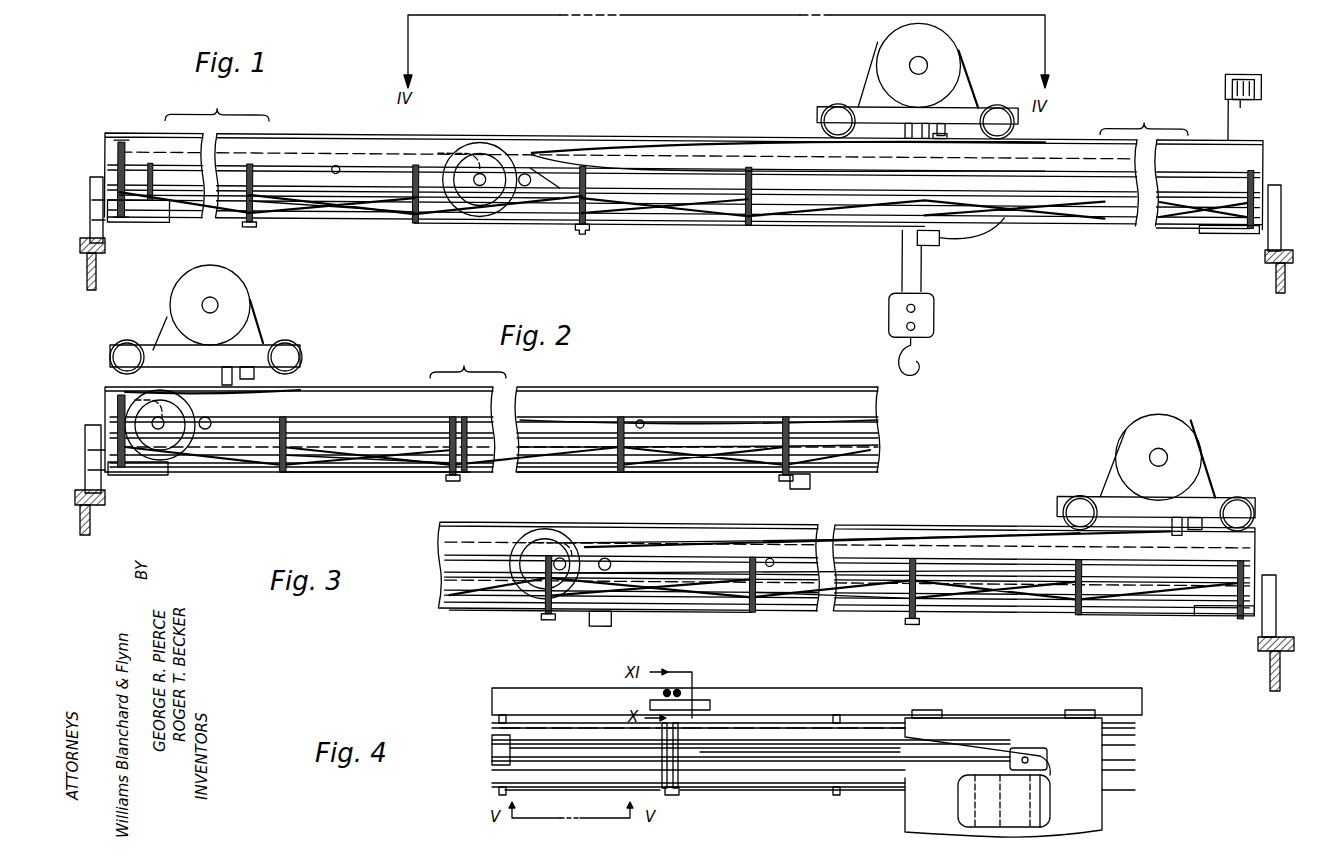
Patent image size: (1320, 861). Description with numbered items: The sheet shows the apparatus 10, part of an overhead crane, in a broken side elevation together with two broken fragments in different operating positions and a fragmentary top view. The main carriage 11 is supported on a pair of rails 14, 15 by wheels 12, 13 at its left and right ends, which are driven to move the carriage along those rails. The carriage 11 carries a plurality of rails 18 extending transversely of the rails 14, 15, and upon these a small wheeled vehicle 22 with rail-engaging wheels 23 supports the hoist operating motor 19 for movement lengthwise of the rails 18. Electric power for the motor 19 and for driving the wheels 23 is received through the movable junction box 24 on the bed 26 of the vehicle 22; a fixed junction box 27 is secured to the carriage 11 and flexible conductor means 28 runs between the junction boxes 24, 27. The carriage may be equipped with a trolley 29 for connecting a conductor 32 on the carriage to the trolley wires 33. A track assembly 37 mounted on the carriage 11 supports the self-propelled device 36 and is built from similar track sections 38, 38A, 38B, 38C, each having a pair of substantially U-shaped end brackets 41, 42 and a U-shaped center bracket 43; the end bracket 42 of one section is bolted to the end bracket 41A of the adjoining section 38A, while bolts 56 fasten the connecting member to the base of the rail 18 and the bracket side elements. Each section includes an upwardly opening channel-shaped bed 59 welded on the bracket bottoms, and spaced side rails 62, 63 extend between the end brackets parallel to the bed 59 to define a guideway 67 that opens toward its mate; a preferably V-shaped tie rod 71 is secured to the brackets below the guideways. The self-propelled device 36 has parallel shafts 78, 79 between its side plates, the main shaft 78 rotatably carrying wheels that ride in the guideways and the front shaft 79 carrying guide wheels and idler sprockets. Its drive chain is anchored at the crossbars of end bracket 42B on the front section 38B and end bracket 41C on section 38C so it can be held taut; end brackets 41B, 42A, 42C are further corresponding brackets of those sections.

In FIG. 1, the apparatus 10 is at (695, 102).
In FIG. 2, the apparatus 10 is at (380, 368).
In FIG. 3, the apparatus 10 is at (982, 498).
In FIG. 4, the apparatus 10 is at (955, 682).
In FIG. 1, the main carriage 11 is at (1085, 134).
In FIG. 2, the main carriage 11 is at (645, 386).
In FIG. 3, the main carriage 11 is at (868, 535).
In FIG. 4, the main carriage 11 is at (865, 695).
In FIG. 1, the wheel 12 is at (90, 185).
In FIG. 2, the wheel 12 is at (90, 440).
In FIG. 1, the wheel 13 is at (1275, 185).
In FIG. 3, the wheel 13 is at (1272, 590).
In FIG. 1, the rail 14 is at (96, 280).
In FIG. 2, the rail 14 is at (90, 528).
In FIG. 1, the rail 15 is at (1276, 288).
In FIG. 3, the rail 15 is at (1268, 665).
In FIG. 1, the rails 18 is at (548, 136).
In FIG. 2, the rails 18 is at (492, 429).
In FIG. 3, the rails 18 is at (612, 530).
In FIG. 4, the rails 18 is at (1030, 692).
In FIG. 1, the hoist operating motor 19 is at (880, 40).
In FIG. 2, the hoist operating motor 19 is at (240, 295).
In FIG. 3, the hoist operating motor 19 is at (1180, 425).
In FIG. 4, the hoist operating motor 19 is at (1030, 812).
In FIG. 1, the small wheeled vehicle 22 is at (968, 86).
In FIG. 2, the small wheeled vehicle 22 is at (268, 335).
In FIG. 3, the small wheeled vehicle 22 is at (1115, 478).
In FIG. 4, the small wheeled vehicle 22 is at (1112, 800).
In FIG. 1, the rail-engaging wheels 23 is at (822, 114).
In FIG. 2, the rail-engaging wheels 23 is at (290, 355).
In FIG. 3, the rail-engaging wheels 23 is at (1240, 500).
In FIG. 4, the rail-engaging wheels 23 is at (928, 712).
In FIG. 1, the movable junction box 24 is at (945, 128).
In FIG. 2, the movable junction box 24 is at (250, 382).
In FIG. 3, the movable junction box 24 is at (1195, 528).
In FIG. 1, the bed 26 is at (862, 108).
In FIG. 2, the bed 26 is at (160, 355).
In FIG. 3, the bed 26 is at (1105, 496).
In FIG. 4, the bed 26 is at (1102, 828).
In FIG. 1, the fixed junction box 27 is at (940, 242).
In FIG. 2, the fixed junction box 27 is at (790, 482).
In FIG. 3, the fixed junction box 27 is at (590, 620).
In FIG. 1, the flexible conductor means 28 is at (650, 153).
In FIG. 2, the flexible conductor means 28 is at (195, 392).
In FIG. 3, the flexible conductor means 28 is at (930, 538).
In FIG. 4, the flexible conductor means 28 is at (805, 760).
In FIG. 1, the trolley 29 is at (1226, 78).
In FIG. 1, the conductor 32 is at (940, 232).
In FIG. 1, the trolley wires 33 is at (1243, 96).
In FIG. 1, the self-propelled device 36 is at (470, 142).
In FIG. 2, the self-propelled device 36 is at (170, 452).
In FIG. 3, the self-propelled device 36 is at (540, 540).
In FIG. 4, the self-propelled device 36 is at (505, 750).
In FIG. 1, the track assembly 37 is at (770, 225).
In FIG. 2, the track assembly 37 is at (705, 405).
In FIG. 3, the track assembly 37 is at (1112, 625).
In FIG. 4, the track assembly 37 is at (543, 722).
In FIG. 1, the track section 38 is at (410, 215).
In FIG. 2, the track section 38 is at (470, 474).
In FIG. 4, the track section 38 is at (552, 785).
In FIG. 1, the track section 38A is at (675, 220).
In FIG. 2, the track section 38A is at (540, 415).
In FIG. 3, the track section 38A is at (495, 608).
In FIG. 4, the track section 38A is at (820, 790).
In FIG. 1, the track section 38B is at (1175, 222).
In FIG. 3, the track section 38B is at (1158, 616).
In FIG. 1, the track section 38C is at (165, 222).
In FIG. 2, the track section 38C is at (362, 467).
In FIG. 1, the end bracket 41 is at (255, 172).
In FIG. 2, the end bracket 41 is at (466, 420).
In FIG. 1, the end bracket 41A is at (590, 168).
In FIG. 4, the end bracket 41A is at (680, 775).
In FIG. 3, the end bracket 41B is at (915, 610).
In FIG. 1, the end bracket 41C is at (125, 150).
In FIG. 1, the end bracket 42 is at (578, 212).
In FIG. 4, the end bracket 42 is at (660, 790).
In FIG. 2, the end bracket 42A is at (778, 425).
In FIG. 3, the end bracket 42A is at (560, 600).
In FIG. 1, the end bracket 42B is at (1245, 178).
In FIG. 3, the end bracket 42B is at (1245, 560).
In FIG. 2, the end bracket 42C is at (448, 425).
In FIG. 1, the center bracket 43 is at (418, 225).
In FIG. 4, the center bracket 43 is at (500, 772).
In FIG. 4, the bolts 56 is at (677, 690).
In FIG. 4, the channel-shaped bed 59 is at (490, 742).
In FIG. 1, the side rail 62 is at (695, 165).
In FIG. 2, the side rail 62 is at (870, 420).
In FIG. 3, the side rail 62 is at (448, 556).
In FIG. 1, the side rail 63 is at (630, 195).
In FIG. 2, the side rail 63 is at (870, 442).
In FIG. 3, the side rail 63 is at (448, 574).
In FIG. 1, the guideway 67 is at (336, 164).
In FIG. 2, the guideway 67 is at (645, 420).
In FIG. 3, the guideway 67 is at (770, 556).
In FIG. 1, the tie rod 71 is at (335, 205).
In FIG. 2, the tie rod 71 is at (565, 460).
In FIG. 3, the tie rod 71 is at (800, 610).
In FIG. 1, the main shaft 78 is at (479, 184).
In FIG. 2, the main shaft 78 is at (160, 430).
In FIG. 1, the front shaft 79 is at (524, 170).
In FIG. 2, the front shaft 79 is at (208, 430).